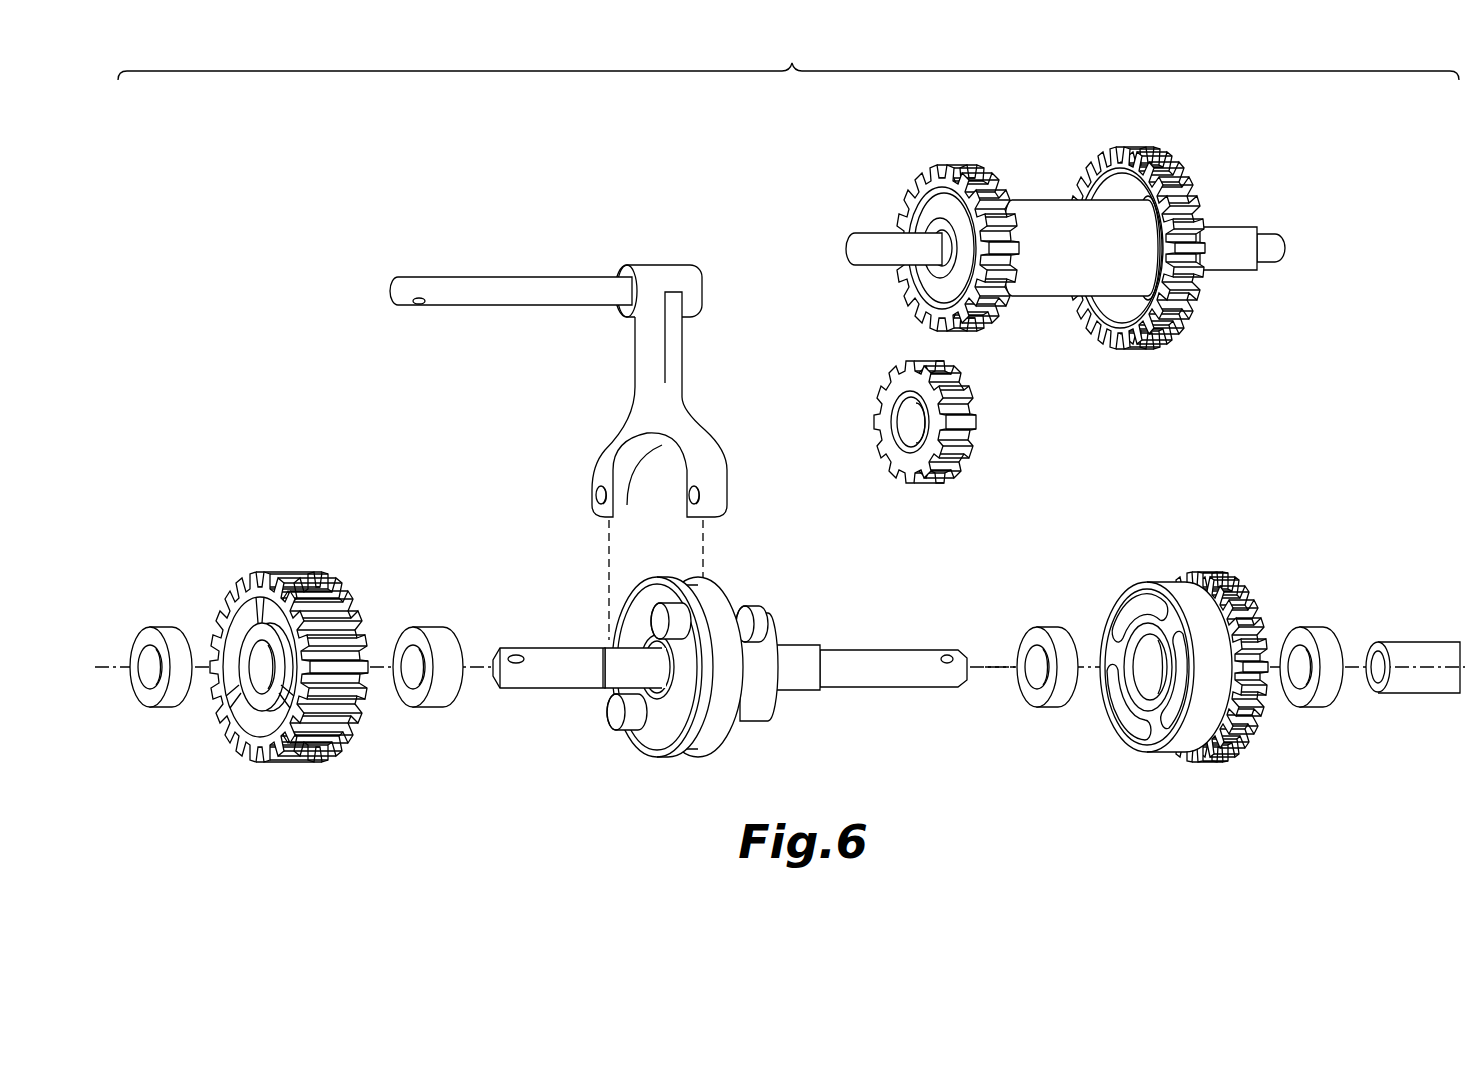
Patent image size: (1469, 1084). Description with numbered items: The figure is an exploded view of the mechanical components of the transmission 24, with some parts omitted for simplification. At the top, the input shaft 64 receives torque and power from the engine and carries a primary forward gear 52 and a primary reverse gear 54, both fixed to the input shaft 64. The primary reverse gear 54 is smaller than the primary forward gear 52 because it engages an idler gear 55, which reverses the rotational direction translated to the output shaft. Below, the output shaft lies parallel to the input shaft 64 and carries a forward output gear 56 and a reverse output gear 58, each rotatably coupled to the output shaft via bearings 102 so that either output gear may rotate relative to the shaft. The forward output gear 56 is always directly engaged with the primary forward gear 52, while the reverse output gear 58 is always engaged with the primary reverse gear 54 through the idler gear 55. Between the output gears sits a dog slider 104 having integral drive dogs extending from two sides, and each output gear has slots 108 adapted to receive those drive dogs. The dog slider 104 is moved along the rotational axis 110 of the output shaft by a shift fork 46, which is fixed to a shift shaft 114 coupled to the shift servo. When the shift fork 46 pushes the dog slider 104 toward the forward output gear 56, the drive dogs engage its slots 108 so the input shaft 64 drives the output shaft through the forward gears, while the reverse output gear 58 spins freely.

The transmission 24 is at (788, 55).
The shift fork 46 is at (631, 409).
The primary forward gear 52 is at (1170, 345).
The primary reverse gear 54 is at (950, 167).
The idler gear 55 is at (983, 418).
The forward output gear 56 is at (738, 654).
The reverse output gear 58 is at (280, 580).
The input shaft 64 is at (1240, 230).
The bearings 102 is at (1313, 625).
The dog slider 104 is at (687, 691).
The slots 108 is at (1147, 602).
The rotational axis 110 is at (985, 667).
The shift shaft 114 is at (433, 625).